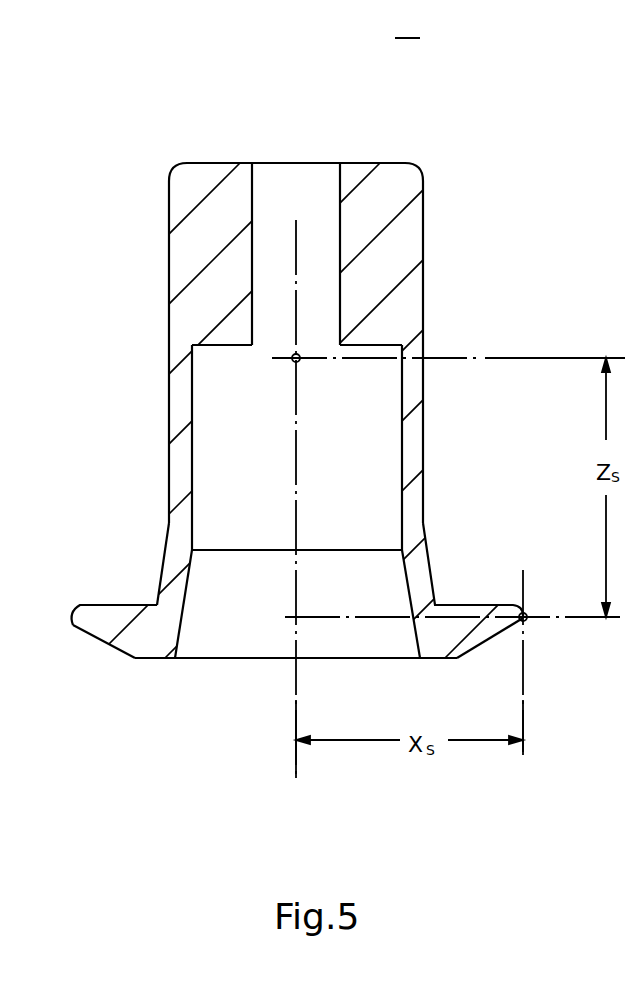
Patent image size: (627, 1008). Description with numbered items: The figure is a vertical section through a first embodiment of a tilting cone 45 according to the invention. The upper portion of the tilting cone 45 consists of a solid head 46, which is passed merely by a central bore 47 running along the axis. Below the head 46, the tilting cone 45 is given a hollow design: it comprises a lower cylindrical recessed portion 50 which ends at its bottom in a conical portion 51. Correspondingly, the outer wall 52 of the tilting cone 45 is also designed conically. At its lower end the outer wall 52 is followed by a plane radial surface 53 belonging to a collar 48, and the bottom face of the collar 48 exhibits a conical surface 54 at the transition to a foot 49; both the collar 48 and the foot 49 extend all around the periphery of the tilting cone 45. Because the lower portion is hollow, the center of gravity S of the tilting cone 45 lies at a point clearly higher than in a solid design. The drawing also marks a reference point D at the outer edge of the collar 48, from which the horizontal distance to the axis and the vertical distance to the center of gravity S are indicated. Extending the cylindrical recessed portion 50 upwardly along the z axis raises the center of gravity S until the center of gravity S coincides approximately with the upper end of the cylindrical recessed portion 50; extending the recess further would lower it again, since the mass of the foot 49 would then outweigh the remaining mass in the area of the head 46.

The tilting cone 45 is at (472, 143).
The solid head 46 is at (408, 245).
The central bore 47 is at (339, 193).
The collar 48 is at (477, 621).
The foot 49 is at (437, 645).
The cylindrical recessed portion 50 is at (194, 462).
The conical portion 51 is at (190, 596).
The outer wall 52 is at (153, 563).
The plane radial surface 53 is at (109, 601).
The conical surface 54 is at (93, 640).
The center of gravity S is at (299, 362).
The point D is at (525, 613).